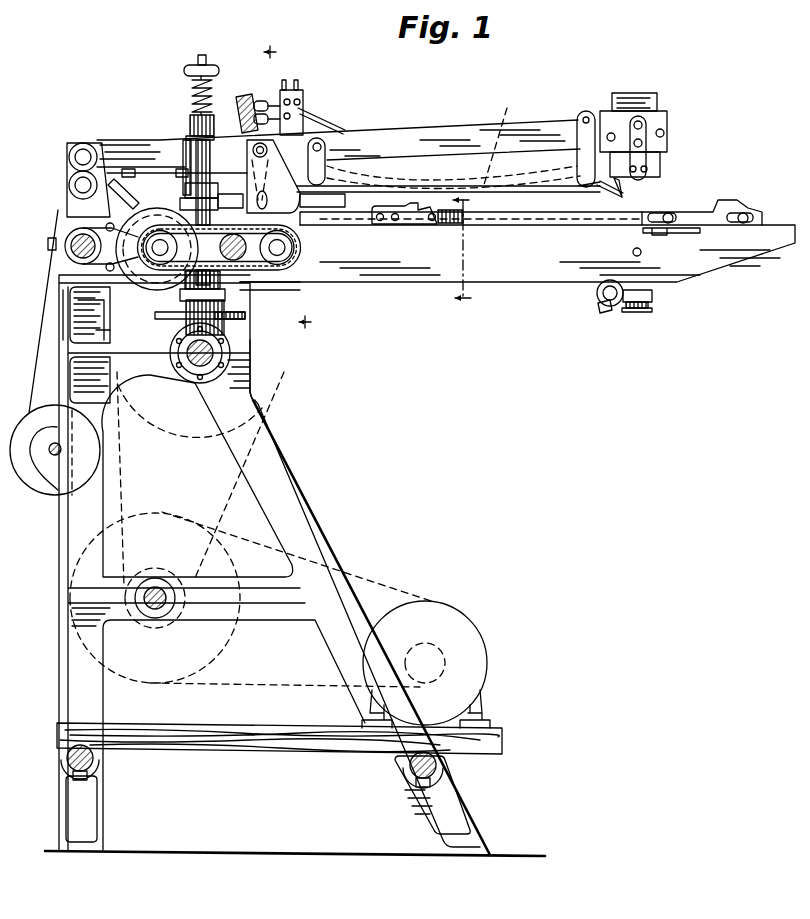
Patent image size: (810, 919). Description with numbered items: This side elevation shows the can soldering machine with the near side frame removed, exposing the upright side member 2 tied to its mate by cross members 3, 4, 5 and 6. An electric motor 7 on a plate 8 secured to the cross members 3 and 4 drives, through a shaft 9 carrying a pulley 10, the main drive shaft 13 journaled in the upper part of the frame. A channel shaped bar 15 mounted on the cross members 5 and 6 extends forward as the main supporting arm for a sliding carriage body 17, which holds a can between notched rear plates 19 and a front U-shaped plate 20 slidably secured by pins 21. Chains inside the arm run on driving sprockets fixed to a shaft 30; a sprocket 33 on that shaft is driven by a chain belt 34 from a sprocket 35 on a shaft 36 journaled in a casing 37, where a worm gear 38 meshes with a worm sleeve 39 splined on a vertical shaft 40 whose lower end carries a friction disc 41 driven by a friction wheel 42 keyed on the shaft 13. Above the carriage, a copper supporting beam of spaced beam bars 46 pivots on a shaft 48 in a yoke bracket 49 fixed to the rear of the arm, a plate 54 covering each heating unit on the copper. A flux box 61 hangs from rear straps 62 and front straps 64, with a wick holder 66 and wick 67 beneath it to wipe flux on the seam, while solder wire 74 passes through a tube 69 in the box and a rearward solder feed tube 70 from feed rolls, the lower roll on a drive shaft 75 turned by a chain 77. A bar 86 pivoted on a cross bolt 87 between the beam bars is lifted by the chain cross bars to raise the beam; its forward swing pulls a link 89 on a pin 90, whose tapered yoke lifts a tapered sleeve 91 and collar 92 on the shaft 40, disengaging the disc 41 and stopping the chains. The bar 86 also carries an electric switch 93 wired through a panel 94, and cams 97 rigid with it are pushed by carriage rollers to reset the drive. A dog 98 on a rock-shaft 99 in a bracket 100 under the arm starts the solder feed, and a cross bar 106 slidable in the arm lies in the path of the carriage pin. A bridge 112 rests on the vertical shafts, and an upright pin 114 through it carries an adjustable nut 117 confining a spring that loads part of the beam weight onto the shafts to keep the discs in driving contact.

The upright side member 2 is at (58, 692).
The cross member 3 is at (68, 770).
The cross member 4 is at (420, 780).
The cross member 5 is at (66, 250).
The cross member 6 is at (256, 285).
The electric motor 7 is at (488, 670).
The plate 8 is at (245, 793).
The shaft 9 is at (155, 612).
The pulley 10 is at (471, 251).
The main drive shaft 13 is at (188, 368).
The channel shaped bar 15 is at (517, 283).
The carriage body 17 is at (537, 218).
The plate 19 is at (420, 226).
The U-shaped plate 20 is at (700, 210).
The pin 21 is at (670, 217).
The shaft 30 is at (300, 253).
The sprocket 33 is at (246, 258).
The chain belt 34 is at (222, 300).
The sprocket 35 is at (100, 305).
The shaft 36 is at (78, 300).
The casing 37 is at (180, 182).
The worm gear 38 is at (108, 327).
The worm sleeve 39 is at (155, 315).
The vertical shaft 40 is at (172, 140).
The friction disc 41 is at (178, 345).
The friction wheel 42 is at (254, 375).
The beam bar 46 is at (450, 140).
The shaft 48 is at (85, 148).
The yoke bracket 49 is at (68, 200).
The plate 54 is at (660, 165).
The flux box 61 is at (405, 165).
The strap 62 is at (330, 147).
The strap 64 is at (582, 140).
The wick holder 66 is at (520, 222).
The wick 67 is at (610, 193).
The tube 69 is at (505, 138).
The solder feed tube 70 is at (150, 165).
The solder wire 74 is at (52, 238).
The drive shaft 75 is at (70, 155).
The chain 77 is at (112, 160).
The bar 86 is at (280, 210).
The cross bolt 87 is at (240, 128).
The link 89 is at (226, 207).
The pin 90 is at (298, 203).
The tapered sleeve 91 is at (185, 189).
The collar 92 is at (164, 140).
The electric switch 93 is at (258, 112).
The panel 94 is at (303, 95).
The cam 97 is at (325, 210).
The dog 98 is at (600, 287).
The rock-shaft 99 is at (615, 305).
The bracket 100 is at (652, 300).
The cross bar 106 is at (655, 235).
The bridge 112 is at (183, 140).
The upright pin 114 is at (200, 62).
The nut 117 is at (210, 78).